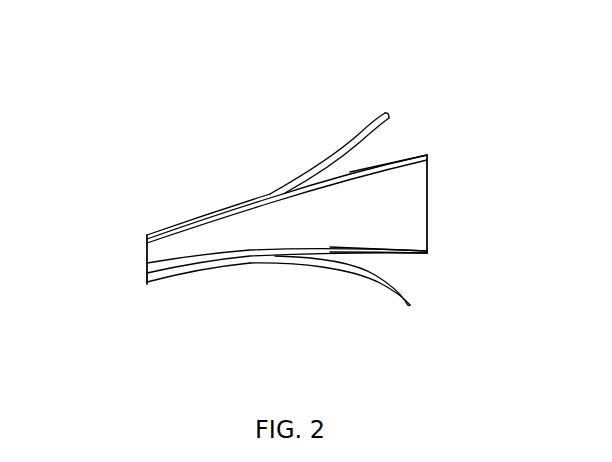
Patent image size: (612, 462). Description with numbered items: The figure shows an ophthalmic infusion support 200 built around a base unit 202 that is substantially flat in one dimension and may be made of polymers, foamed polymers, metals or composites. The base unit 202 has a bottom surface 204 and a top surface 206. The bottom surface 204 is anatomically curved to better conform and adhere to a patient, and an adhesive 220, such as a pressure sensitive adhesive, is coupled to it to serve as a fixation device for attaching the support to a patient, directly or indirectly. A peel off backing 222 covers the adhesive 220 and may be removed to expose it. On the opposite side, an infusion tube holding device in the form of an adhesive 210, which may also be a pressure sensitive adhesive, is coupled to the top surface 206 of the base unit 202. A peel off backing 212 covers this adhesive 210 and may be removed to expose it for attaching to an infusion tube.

The ophthalmic infusion support 200 is at (109, 350).
The base unit 202 is at (155, 253).
The bottom surface 204 is at (223, 289).
The top surface 206 is at (208, 220).
The infusion tube holding device adhesive 210 is at (382, 167).
The peel off backing 212 is at (387, 117).
The adhesive 220 is at (405, 253).
The peel off backing 222 is at (413, 307).